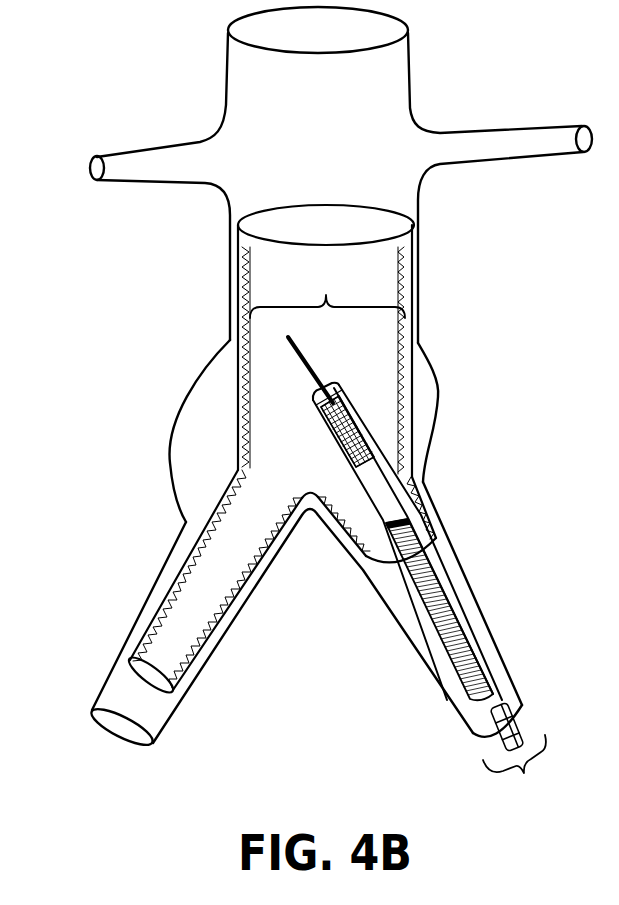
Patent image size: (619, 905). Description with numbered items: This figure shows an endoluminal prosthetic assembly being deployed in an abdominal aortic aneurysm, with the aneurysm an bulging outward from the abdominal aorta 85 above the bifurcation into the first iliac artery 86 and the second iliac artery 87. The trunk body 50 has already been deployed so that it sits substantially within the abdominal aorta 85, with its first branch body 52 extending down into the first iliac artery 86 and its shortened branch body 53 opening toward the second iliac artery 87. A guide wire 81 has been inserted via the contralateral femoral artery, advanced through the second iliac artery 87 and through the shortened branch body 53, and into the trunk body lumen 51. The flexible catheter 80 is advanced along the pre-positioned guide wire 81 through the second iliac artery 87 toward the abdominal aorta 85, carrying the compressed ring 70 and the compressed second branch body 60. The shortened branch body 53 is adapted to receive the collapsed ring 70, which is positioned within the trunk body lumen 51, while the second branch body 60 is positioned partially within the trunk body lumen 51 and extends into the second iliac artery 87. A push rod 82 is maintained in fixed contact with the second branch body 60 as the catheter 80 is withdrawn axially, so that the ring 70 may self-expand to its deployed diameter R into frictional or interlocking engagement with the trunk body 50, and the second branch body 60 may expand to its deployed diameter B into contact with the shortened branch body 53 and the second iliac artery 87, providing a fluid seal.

The trunk body 50 is at (416, 377).
The trunk body lumen 51 is at (355, 357).
The first branch body 52 is at (150, 598).
The shortened branch body 53 is at (433, 513).
The second branch body 60 is at (414, 600).
The ring 70 is at (360, 436).
The catheter 80 is at (375, 502).
The guide wire 81 is at (307, 365).
The push rod 82 is at (520, 718).
The abdominal aorta 85 is at (255, 78).
The first iliac artery 86 is at (123, 697).
The second iliac artery 87 is at (473, 617).
The aneurysm an is at (202, 445).
The ring deployed diameter R is at (327, 288).
The second branch body deployed diameter B is at (514, 770).